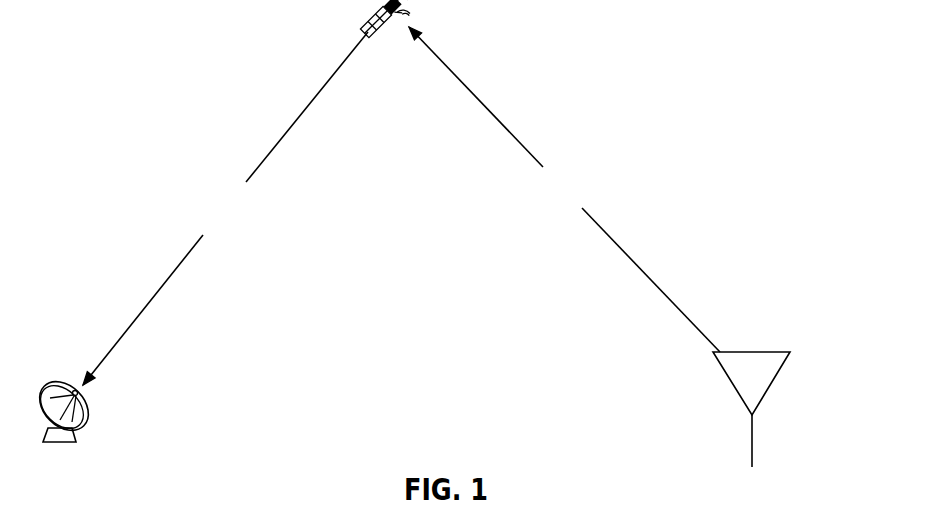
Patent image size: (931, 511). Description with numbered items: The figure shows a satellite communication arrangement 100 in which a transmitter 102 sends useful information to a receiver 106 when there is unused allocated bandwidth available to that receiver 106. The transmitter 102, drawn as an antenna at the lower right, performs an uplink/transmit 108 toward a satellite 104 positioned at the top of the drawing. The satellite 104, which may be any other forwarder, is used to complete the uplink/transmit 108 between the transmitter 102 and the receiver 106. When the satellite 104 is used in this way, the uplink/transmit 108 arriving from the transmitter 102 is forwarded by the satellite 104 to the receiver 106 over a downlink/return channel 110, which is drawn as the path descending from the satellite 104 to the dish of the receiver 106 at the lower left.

The satellite communication system 100 is at (741, 112).
The transmitter 102 is at (772, 391).
The satellite 104 is at (413, 80).
The receiver 106 is at (83, 484).
The uplink/transmit 108 is at (586, 208).
The downlink/return channel 110 is at (245, 228).